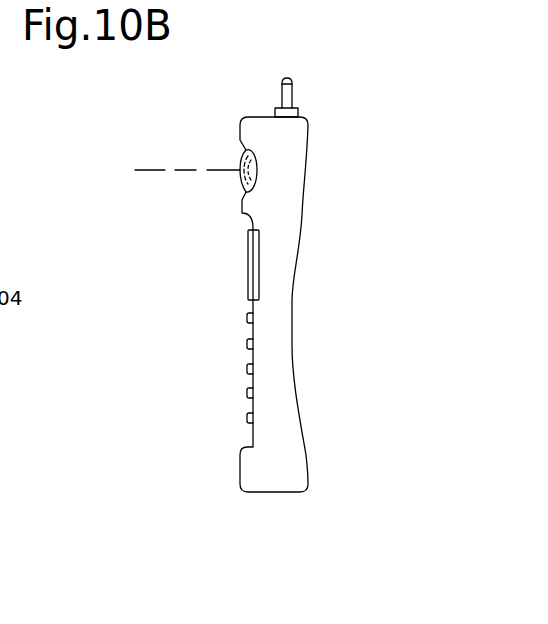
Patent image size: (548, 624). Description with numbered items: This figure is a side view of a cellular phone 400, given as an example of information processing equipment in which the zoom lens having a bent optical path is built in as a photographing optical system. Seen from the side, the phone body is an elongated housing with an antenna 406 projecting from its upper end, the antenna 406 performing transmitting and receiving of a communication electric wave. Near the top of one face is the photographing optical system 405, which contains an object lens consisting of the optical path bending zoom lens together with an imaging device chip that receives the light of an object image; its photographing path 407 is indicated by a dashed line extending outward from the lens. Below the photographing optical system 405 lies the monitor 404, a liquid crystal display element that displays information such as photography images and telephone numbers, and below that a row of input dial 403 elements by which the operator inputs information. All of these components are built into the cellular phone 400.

The cellular phone 400 is at (303, 322).
The input dial 403 is at (247, 395).
The monitor 404 is at (248, 262).
The photographing optical system 405 is at (243, 178).
The antenna 406 is at (293, 90).
The photographing path 407 is at (183, 168).